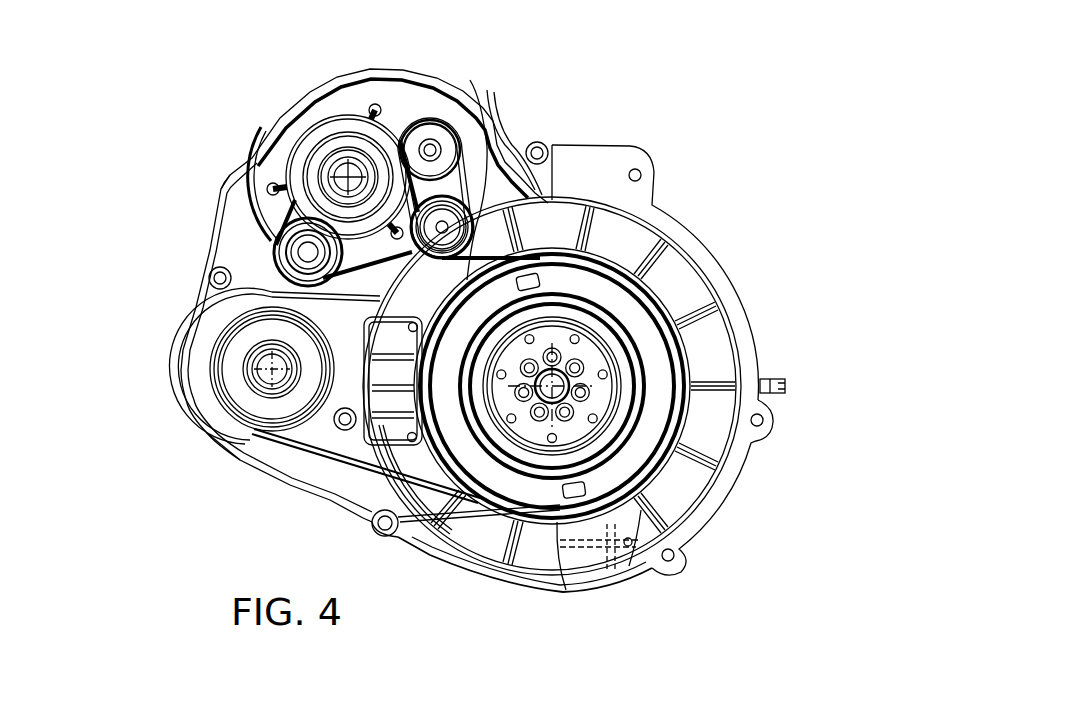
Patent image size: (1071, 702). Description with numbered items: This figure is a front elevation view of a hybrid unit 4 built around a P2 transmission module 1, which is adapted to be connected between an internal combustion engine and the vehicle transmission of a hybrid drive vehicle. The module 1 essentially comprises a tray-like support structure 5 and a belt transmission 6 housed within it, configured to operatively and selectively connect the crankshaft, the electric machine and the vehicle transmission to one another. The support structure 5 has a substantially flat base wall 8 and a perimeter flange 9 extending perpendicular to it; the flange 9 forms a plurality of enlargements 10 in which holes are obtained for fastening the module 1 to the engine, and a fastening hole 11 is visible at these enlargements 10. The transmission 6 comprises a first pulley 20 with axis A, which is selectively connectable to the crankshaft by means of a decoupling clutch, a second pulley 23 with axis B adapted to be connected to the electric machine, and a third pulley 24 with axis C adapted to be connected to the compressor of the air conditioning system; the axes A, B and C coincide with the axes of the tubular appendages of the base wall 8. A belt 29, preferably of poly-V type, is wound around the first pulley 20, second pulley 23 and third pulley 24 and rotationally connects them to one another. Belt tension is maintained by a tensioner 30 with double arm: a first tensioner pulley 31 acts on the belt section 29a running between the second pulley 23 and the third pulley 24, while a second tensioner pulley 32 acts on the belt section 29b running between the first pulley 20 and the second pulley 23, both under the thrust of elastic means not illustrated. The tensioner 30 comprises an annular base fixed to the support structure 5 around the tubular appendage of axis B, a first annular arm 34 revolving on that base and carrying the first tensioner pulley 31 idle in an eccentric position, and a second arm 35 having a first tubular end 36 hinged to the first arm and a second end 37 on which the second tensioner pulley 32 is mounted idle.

The transmission module 1 is at (702, 217).
The hybrid unit 4 is at (709, 91).
The support structure 5 is at (468, 588).
The transmission 6 is at (350, 482).
The base wall 8 is at (324, 485).
The perimeter flange 9 is at (527, 588).
The enlargements 10 is at (766, 430).
The mounting hole 11 is at (765, 420).
The first pulley 20 is at (667, 350).
The second pulley 23 is at (328, 122).
The third pulley 24 is at (232, 377).
The belt 29 is at (545, 148).
The belt section 29a is at (197, 323).
The belt section 29b is at (507, 240).
The tensioner 30 is at (308, 140).
The first tensioner pulley 31 is at (276, 250).
The second tensioner pulley 32 is at (414, 324).
The first annular arm 34 is at (272, 137).
The second arm 35 is at (462, 115).
The first tubular end 36 is at (430, 117).
The second end 37 is at (470, 255).
The axis A is at (568, 415).
The axis B is at (217, 181).
The axis C is at (255, 392).